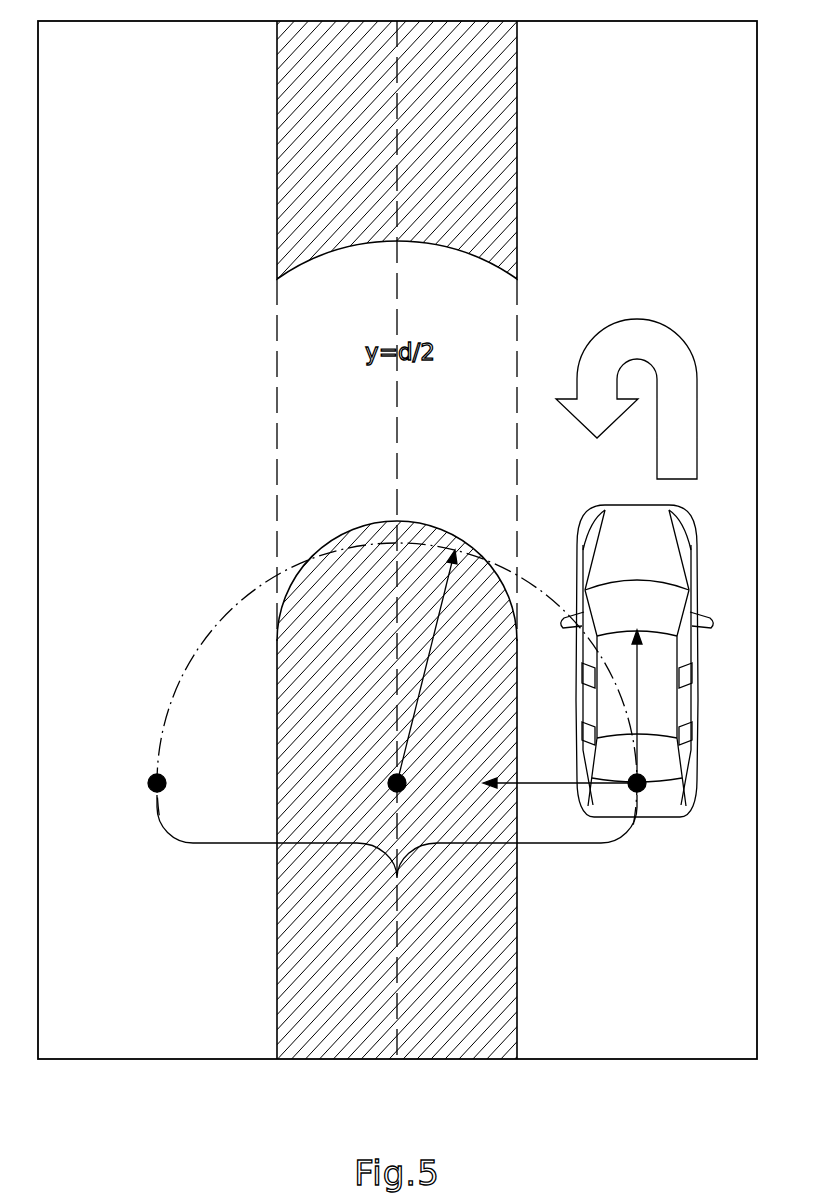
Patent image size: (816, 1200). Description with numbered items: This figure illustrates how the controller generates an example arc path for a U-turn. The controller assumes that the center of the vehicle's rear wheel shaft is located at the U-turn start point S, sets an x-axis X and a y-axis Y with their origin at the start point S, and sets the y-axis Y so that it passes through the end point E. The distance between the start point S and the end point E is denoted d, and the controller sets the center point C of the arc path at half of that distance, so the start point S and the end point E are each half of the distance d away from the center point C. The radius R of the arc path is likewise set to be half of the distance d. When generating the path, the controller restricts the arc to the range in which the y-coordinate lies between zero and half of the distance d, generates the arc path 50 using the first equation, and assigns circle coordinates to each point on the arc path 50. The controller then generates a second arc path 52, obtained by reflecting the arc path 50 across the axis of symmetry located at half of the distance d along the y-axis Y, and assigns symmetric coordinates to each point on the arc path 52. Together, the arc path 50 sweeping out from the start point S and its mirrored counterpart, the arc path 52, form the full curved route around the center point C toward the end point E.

The arc path 50 is at (535, 580).
The arc path 52 is at (236, 606).
The end point E is at (165, 772).
The center point C is at (388, 790).
The start point S is at (626, 771).
The radius R is at (427, 666).
The x-axis X is at (627, 702).
The y-axis Y is at (557, 769).
The distance between the start point and the end point d is at (397, 851).